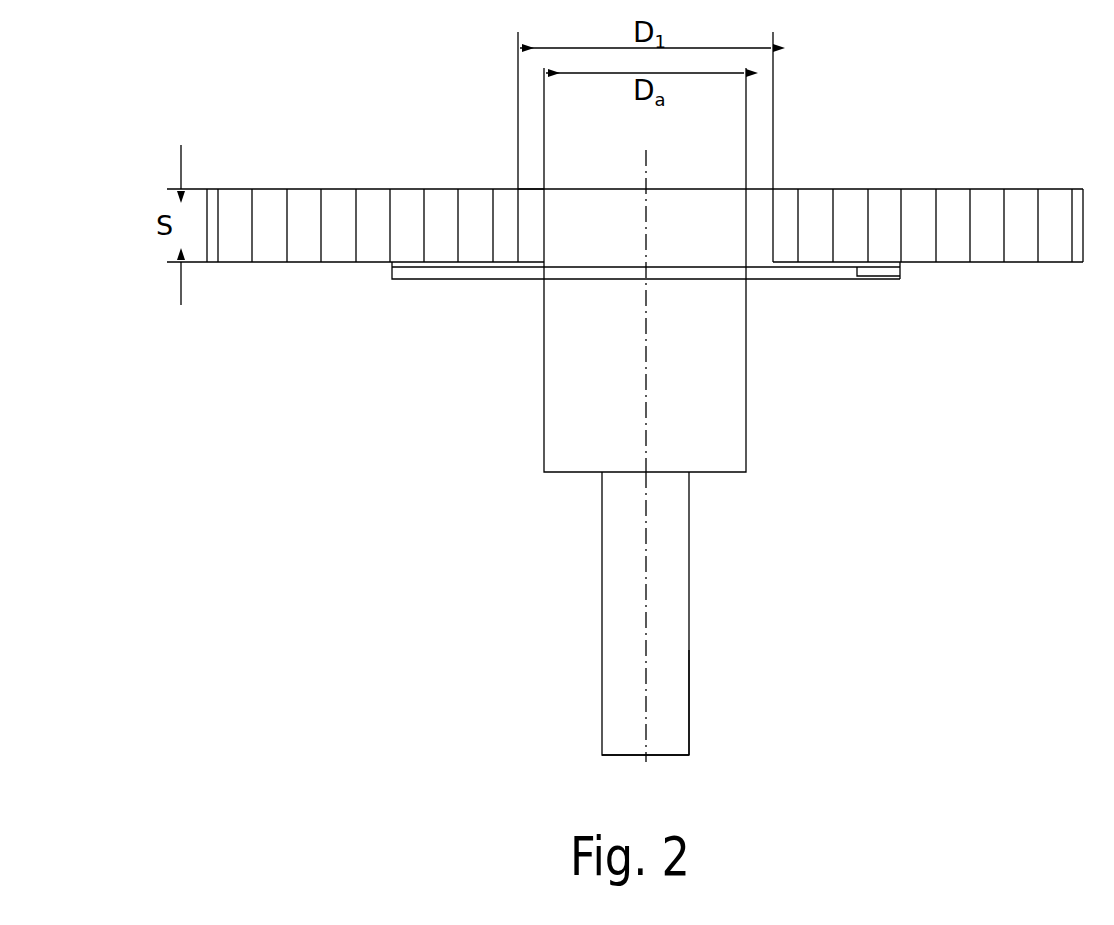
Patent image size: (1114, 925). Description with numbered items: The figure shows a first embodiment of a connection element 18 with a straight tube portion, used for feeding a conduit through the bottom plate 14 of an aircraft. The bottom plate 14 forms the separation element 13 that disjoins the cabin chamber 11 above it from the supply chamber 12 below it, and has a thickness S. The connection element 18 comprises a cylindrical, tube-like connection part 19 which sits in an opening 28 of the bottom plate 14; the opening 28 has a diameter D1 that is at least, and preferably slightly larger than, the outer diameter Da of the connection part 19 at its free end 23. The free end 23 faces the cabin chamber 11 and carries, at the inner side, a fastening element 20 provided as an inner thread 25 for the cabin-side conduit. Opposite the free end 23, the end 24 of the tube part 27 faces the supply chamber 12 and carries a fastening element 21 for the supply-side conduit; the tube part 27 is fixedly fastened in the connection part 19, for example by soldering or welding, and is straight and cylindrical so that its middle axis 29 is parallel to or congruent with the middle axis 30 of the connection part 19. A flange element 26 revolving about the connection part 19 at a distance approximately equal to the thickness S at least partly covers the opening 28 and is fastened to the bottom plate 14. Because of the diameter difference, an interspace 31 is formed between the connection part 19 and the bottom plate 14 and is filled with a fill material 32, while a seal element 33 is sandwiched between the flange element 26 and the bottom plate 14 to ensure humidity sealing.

The cabin chamber 11 is at (938, 159).
The supply chamber 12 is at (977, 424).
The separation element 13 is at (655, 272).
The bottom plate 14 is at (1052, 250).
The connection element 18 is at (440, 362).
The connection part 19 is at (722, 417).
The fastening element 20 is at (733, 210).
The fastening element 21 is at (704, 738).
The free end 23 is at (569, 176).
The end 24 is at (620, 762).
The inner thread 25 is at (548, 216).
The flange element 26 is at (458, 271).
The tube part 27 is at (668, 570).
The opening 28 is at (778, 214).
The middle axis 29 is at (650, 630).
The middle axis 30 is at (645, 350).
The interspace 31 is at (461, 139).
The fill material 32 is at (524, 181).
The seal element 33 is at (857, 277).